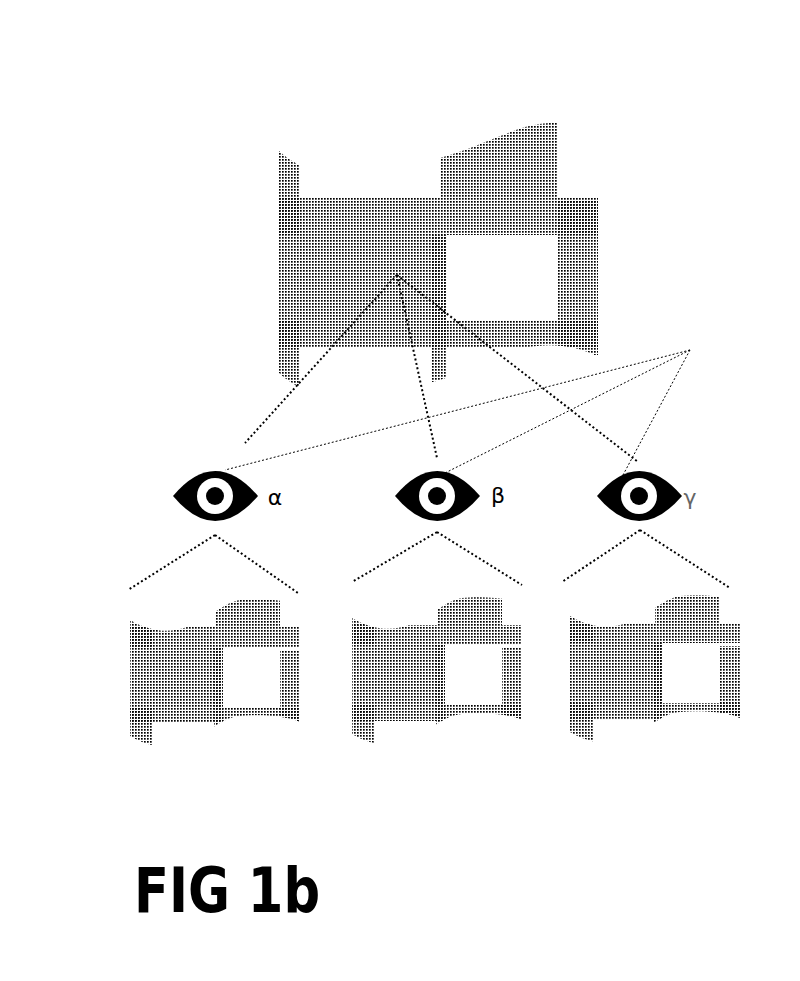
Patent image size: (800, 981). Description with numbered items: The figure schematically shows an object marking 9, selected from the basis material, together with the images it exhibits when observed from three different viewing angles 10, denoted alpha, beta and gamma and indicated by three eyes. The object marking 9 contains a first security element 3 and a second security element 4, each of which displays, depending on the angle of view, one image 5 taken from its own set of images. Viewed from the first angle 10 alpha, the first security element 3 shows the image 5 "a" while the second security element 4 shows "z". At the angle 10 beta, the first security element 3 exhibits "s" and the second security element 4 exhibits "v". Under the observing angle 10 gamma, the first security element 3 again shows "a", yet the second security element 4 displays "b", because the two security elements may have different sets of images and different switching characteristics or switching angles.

The first security element 3 is at (355, 237).
The second security element 4 is at (470, 232).
The image 5 is at (247, 676).
The object marking 9 is at (451, 416).
The angle of view 10 is at (479, 408).